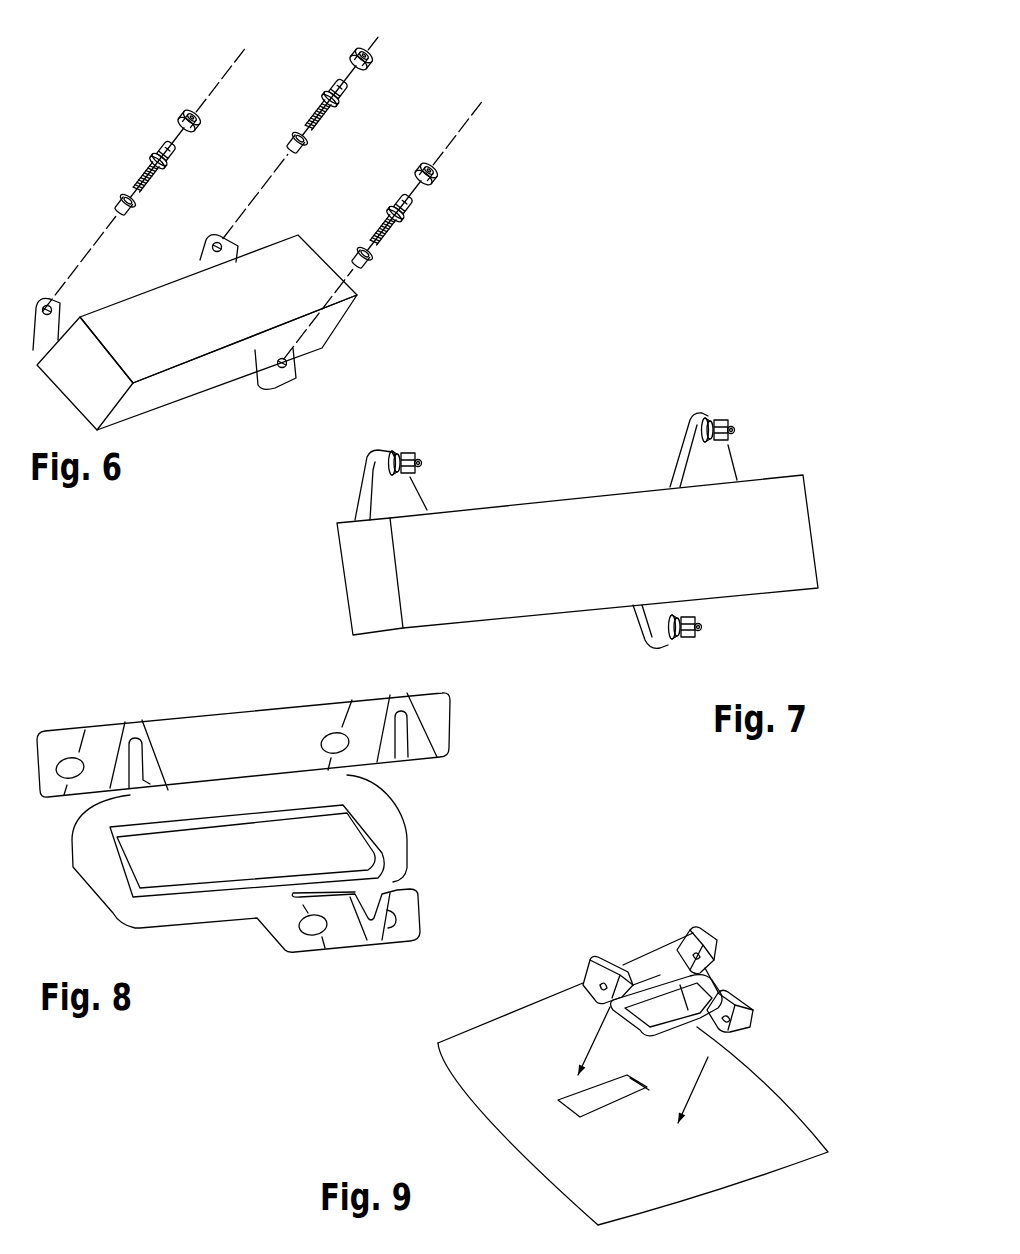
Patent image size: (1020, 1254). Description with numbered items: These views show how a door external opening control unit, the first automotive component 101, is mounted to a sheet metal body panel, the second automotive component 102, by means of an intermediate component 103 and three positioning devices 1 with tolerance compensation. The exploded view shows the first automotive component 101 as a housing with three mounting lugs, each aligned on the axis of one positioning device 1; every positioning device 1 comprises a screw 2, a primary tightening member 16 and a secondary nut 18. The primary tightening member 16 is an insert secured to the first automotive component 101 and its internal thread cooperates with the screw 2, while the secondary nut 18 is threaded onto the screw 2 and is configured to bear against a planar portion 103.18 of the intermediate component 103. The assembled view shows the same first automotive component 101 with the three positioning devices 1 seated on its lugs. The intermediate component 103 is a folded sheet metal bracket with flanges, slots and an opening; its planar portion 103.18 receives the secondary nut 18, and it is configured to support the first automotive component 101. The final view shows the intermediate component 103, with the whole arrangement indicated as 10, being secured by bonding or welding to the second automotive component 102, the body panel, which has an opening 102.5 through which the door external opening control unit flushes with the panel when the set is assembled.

In FIG. 6, the positioning device with tolerance compensation 1 is at (264, 186).
In FIG. 7, the positioning device with tolerance compensation 1 is at (408, 432).
In FIG. 6, the screw 2 is at (408, 206).
In FIG. 9, the fastening arrangement 10 is at (610, 1025).
In FIG. 6, the primary tightening member 16 is at (362, 273).
In FIG. 6, the secondary nut 18 is at (440, 178).
In FIG. 6, the first automotive component 101 is at (194, 373).
In FIG. 7, the first automotive component 101 is at (541, 592).
In FIG. 9, the second automotive component 102 is at (610, 1106).
In FIG. 9, the opening 102.5 is at (565, 1098).
In FIG. 8, the intermediate component 103 is at (298, 822).
In FIG. 9, the intermediate component 103 is at (717, 982).
In FIG. 8, the planar portion 103.18 is at (420, 750).